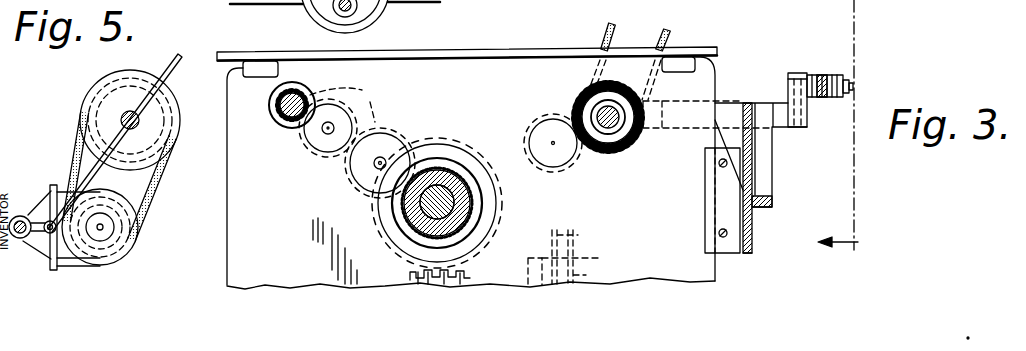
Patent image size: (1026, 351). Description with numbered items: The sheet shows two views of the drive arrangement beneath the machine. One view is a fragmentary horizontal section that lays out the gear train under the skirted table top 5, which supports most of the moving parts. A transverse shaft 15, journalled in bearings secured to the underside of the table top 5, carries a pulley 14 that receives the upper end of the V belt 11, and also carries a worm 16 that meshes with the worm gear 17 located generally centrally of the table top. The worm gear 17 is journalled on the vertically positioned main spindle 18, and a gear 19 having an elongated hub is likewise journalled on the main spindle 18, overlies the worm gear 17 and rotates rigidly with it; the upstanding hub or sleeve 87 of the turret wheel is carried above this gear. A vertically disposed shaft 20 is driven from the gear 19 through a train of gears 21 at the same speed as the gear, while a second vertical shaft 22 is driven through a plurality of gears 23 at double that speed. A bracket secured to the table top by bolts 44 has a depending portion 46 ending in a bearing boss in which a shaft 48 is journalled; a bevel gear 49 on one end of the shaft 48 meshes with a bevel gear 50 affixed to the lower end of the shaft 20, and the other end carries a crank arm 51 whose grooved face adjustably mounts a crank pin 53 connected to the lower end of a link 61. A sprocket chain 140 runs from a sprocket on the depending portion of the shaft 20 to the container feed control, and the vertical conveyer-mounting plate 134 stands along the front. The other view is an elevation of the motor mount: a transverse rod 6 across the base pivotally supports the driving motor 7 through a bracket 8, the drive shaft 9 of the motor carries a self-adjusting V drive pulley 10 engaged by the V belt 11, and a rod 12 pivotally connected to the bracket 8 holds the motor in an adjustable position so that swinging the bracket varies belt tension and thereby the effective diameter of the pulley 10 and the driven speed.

In FIG. 3, the skirted table top 5 is at (232, 262).
In FIG. 5, the transverse rod 6 is at (21, 216).
In FIG. 3, the transverse rod 6 is at (846, 135).
In FIG. 5, the driving motor 7 is at (138, 226).
In FIG. 5, the bracket 8 is at (57, 233).
In FIG. 5, the drive shaft 9 is at (100, 232).
In FIG. 5, the self-adjusting V drive pulley 10 is at (130, 244).
In FIG. 5, the V belt 11 is at (155, 187).
In FIG. 3, the V belt 11 is at (580, 261).
In FIG. 5, the rod 12 is at (176, 67).
In FIG. 3, the rod 12 is at (383, 19).
In FIG. 5, the pulley 14 is at (112, 100).
In FIG. 3, the pulley 14 is at (578, 236).
In FIG. 3, the transverse shaft 15 is at (472, 278).
In FIG. 3, the worm 16 is at (425, 272).
In FIG. 3, the worm gear 17 is at (372, 250).
In FIG. 3, the main spindle 18 is at (422, 167).
In FIG. 3, the gear 19 is at (439, 175).
In FIG. 3, the shaft 20 is at (608, 126).
In FIG. 3, the train of gears 21 is at (500, 140).
In FIG. 3, the shaft 22 is at (283, 116).
In FIG. 3, the gears 23 is at (345, 117).
In FIG. 3, the bolts 44 is at (722, 170).
In FIG. 3, the depending portion 46 is at (763, 162).
In FIG. 3, the shaft 48 is at (700, 88).
In FIG. 3, the bevel gear 49 is at (648, 131).
In FIG. 3, the bevel gear 50 is at (637, 140).
In FIG. 3, the crank arm 51 is at (790, 74).
In FIG. 3, the crank pin 53 is at (851, 87).
In FIG. 3, the link 61 is at (826, 75).
In FIG. 3, the hub or sleeve 87 is at (406, 203).
In FIG. 3, the main conveyer-mounting plate 134 is at (540, 42).
In FIG. 3, the sprocket chain 140 is at (667, 30).